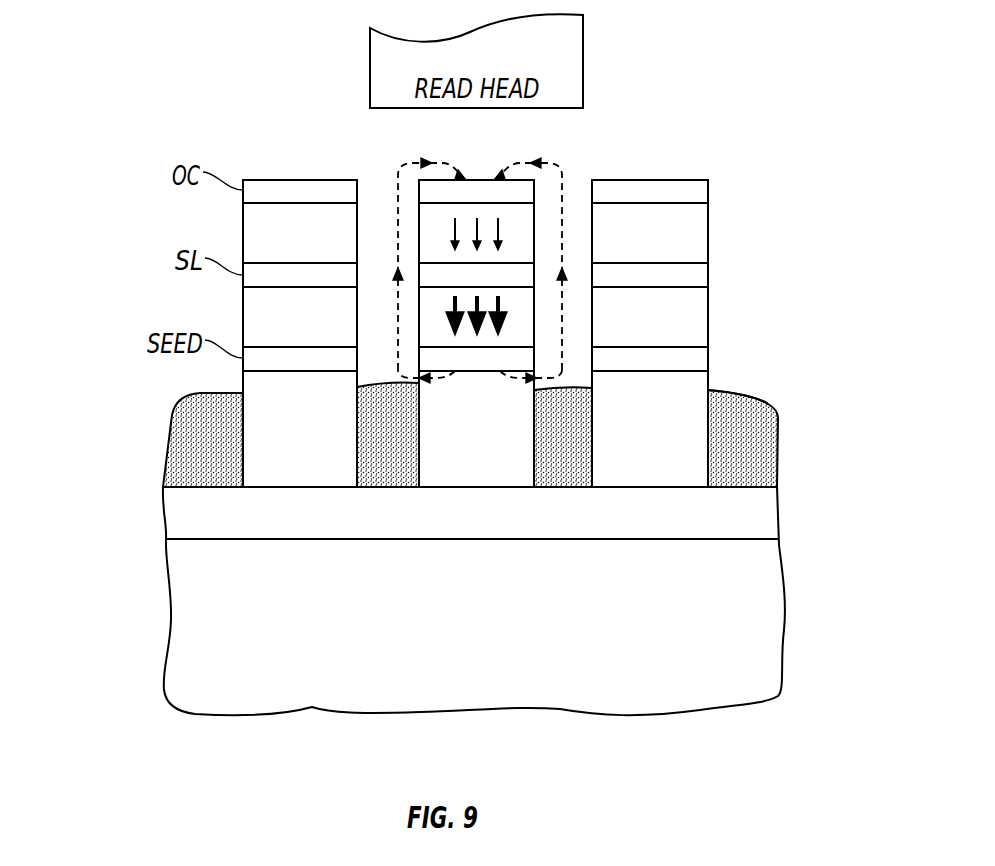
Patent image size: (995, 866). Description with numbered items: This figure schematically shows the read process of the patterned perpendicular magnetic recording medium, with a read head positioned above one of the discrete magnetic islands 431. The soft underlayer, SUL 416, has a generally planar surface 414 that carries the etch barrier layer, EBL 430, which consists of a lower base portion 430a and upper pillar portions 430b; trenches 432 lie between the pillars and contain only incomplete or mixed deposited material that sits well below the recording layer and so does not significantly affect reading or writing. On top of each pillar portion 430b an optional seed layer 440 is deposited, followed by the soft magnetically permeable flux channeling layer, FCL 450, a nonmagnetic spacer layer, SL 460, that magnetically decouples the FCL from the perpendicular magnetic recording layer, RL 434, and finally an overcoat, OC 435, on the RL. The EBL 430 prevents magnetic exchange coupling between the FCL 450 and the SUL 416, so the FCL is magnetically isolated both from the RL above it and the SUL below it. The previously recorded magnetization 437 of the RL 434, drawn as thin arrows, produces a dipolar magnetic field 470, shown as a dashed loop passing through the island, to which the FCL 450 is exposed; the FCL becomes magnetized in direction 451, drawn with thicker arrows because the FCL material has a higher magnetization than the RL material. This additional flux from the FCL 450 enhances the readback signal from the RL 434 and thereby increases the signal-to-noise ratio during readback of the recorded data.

The magnetic island 431 is at (303, 170).
The dipolar magnetic field 470 is at (398, 176).
The overcoat 435 is at (700, 193).
The perpendicular magnetic recording layer 434 is at (700, 238).
The nonmagnetic spacer layer 460 is at (700, 276).
The flux channeling layer 450 is at (700, 326).
The seed layer 440 is at (700, 358).
The magnetization of the recording layer 437 is at (449, 215).
The magnetization direction of the flux channeling layer 451 is at (449, 294).
The trenches 432 is at (370, 440).
The etch barrier layer 430 is at (140, 540).
The pillar portion of the EBL 430b is at (692, 388).
The base portion of the EBL 430a is at (755, 517).
The planar surface of the SUL 414 is at (358, 539).
The soft underlayer 416 is at (765, 660).